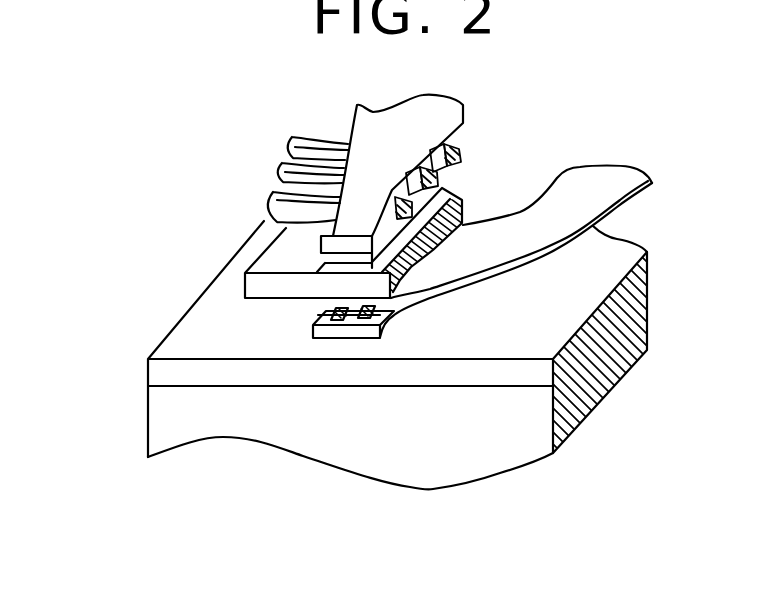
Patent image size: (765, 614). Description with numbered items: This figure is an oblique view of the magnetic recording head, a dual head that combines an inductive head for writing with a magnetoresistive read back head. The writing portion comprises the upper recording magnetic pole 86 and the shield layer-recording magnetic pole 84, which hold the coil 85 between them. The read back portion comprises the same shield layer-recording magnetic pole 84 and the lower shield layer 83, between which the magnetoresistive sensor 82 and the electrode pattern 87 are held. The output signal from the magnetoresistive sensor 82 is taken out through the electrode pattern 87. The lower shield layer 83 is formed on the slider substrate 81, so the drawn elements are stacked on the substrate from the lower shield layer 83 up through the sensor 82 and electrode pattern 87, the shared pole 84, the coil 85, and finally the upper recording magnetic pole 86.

The slider substrate 81 is at (471, 445).
The magnetoresistive sensor 82 is at (338, 336).
The lower shield layer 83 is at (160, 372).
The shield layer-recording magnetic pole 84 is at (263, 284).
The coil 85 is at (282, 180).
The upper recording magnetic pole 86 is at (330, 243).
The electrode pattern 87 is at (318, 313).